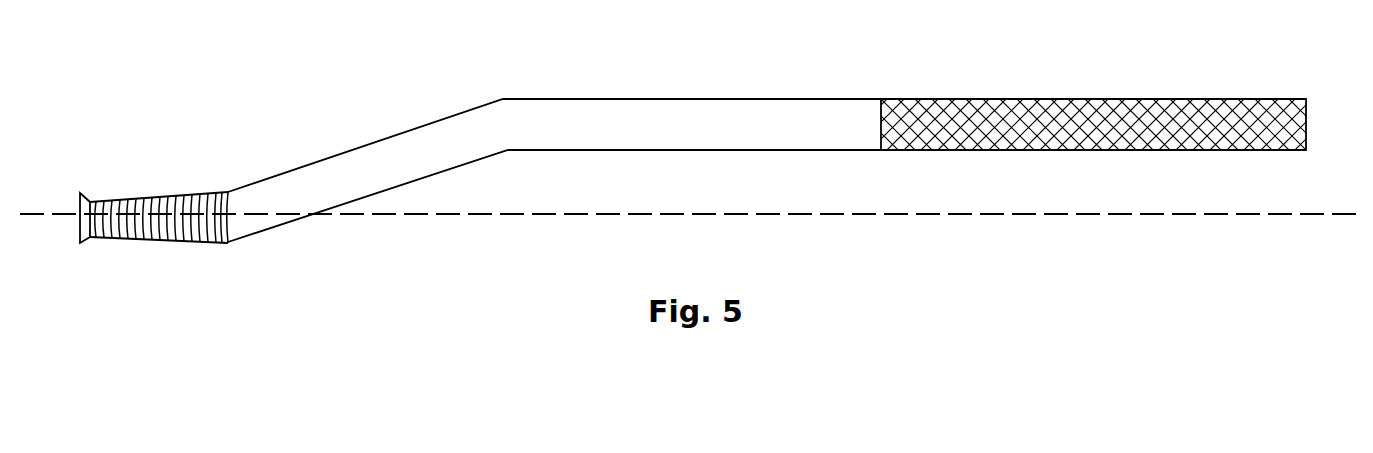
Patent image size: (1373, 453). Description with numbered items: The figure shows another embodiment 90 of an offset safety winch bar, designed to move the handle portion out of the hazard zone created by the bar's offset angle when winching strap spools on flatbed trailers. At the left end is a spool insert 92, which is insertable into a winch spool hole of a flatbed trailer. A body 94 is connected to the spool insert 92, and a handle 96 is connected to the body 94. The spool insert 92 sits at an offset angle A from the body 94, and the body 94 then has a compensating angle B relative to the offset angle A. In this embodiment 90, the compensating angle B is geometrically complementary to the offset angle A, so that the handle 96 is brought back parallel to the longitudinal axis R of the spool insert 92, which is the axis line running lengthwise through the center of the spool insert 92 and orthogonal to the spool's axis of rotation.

The offset safety winch bar embodiment 90 is at (618, 44).
The spool insert 92 is at (152, 197).
The body 94 is at (385, 152).
The handle 96 is at (1015, 107).
The offset angle A is at (256, 170).
The compensating angle B is at (552, 165).
The spool insert longitudinal axis R is at (1328, 213).